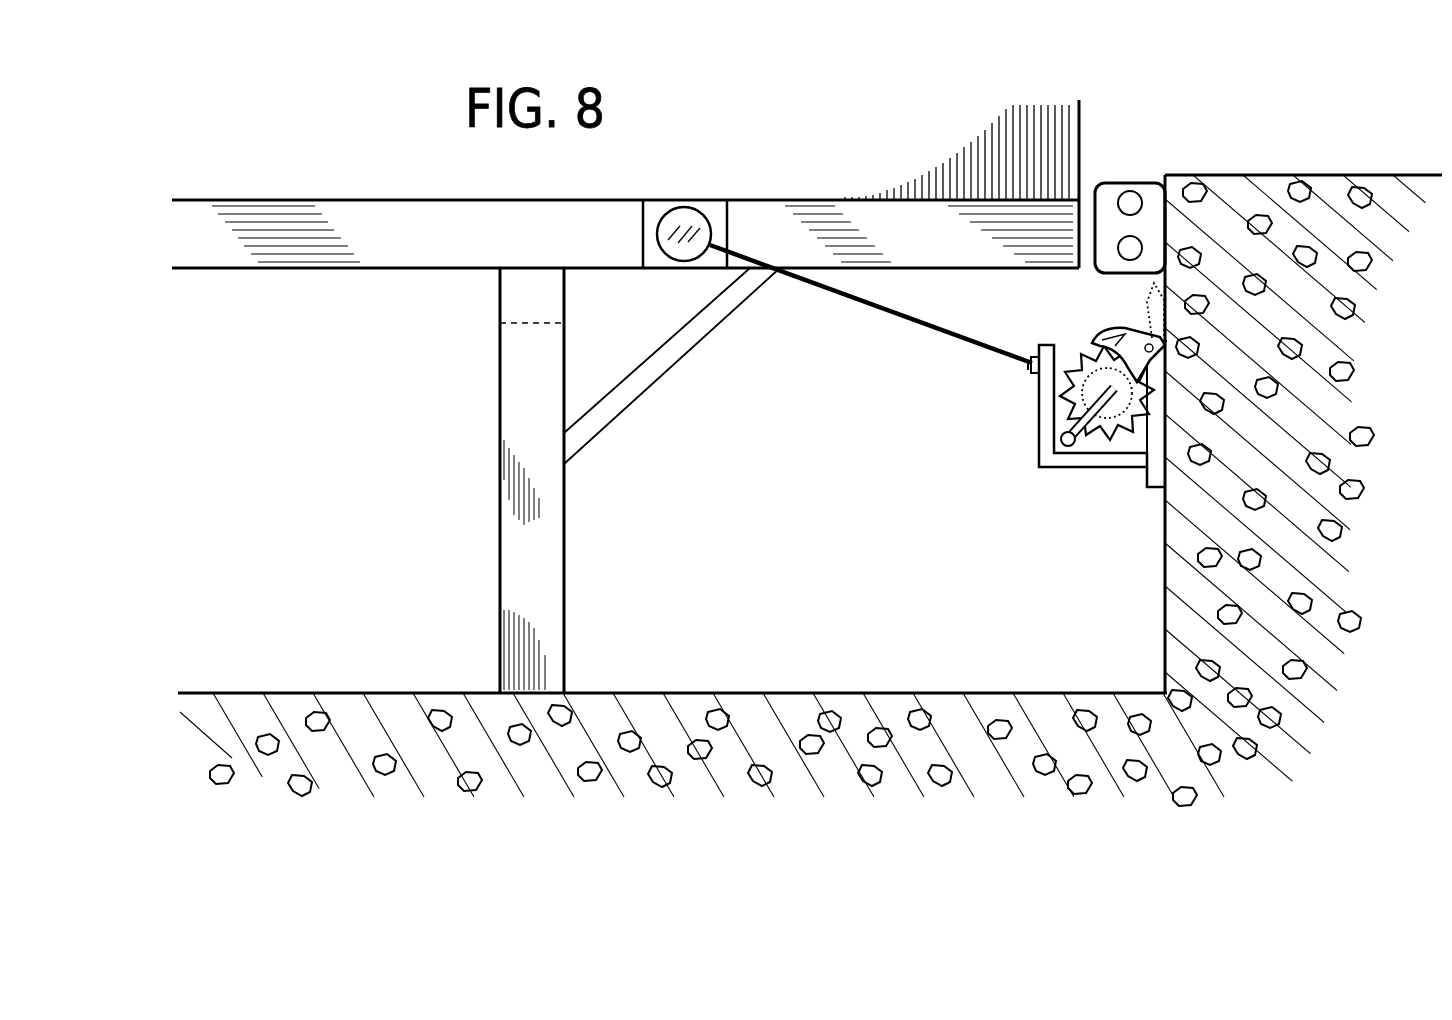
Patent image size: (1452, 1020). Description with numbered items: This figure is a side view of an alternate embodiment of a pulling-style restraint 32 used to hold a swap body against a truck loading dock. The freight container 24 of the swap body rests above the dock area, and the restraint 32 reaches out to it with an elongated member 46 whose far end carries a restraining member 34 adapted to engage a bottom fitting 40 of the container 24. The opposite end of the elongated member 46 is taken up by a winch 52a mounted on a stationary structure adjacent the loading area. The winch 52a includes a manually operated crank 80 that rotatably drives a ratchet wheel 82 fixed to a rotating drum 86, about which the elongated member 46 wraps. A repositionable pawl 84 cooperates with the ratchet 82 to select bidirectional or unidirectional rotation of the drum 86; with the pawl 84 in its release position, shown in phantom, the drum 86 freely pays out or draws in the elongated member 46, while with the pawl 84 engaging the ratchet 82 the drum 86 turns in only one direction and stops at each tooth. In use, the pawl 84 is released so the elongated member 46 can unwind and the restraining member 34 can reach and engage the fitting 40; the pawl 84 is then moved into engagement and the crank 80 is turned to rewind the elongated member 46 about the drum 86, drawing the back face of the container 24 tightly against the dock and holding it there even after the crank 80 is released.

The freight container 24 is at (1080, 140).
The pulling-style restraint 32 is at (772, 377).
The restraining member 34 is at (657, 234).
The bottom fitting 40 is at (728, 229).
The elongated member 46 is at (885, 313).
The winch 52a is at (1040, 432).
The crank 80 is at (1080, 446).
The ratchet wheel 82 is at (1120, 448).
The pawl 84 is at (1152, 292).
The drum 86 is at (1083, 393).